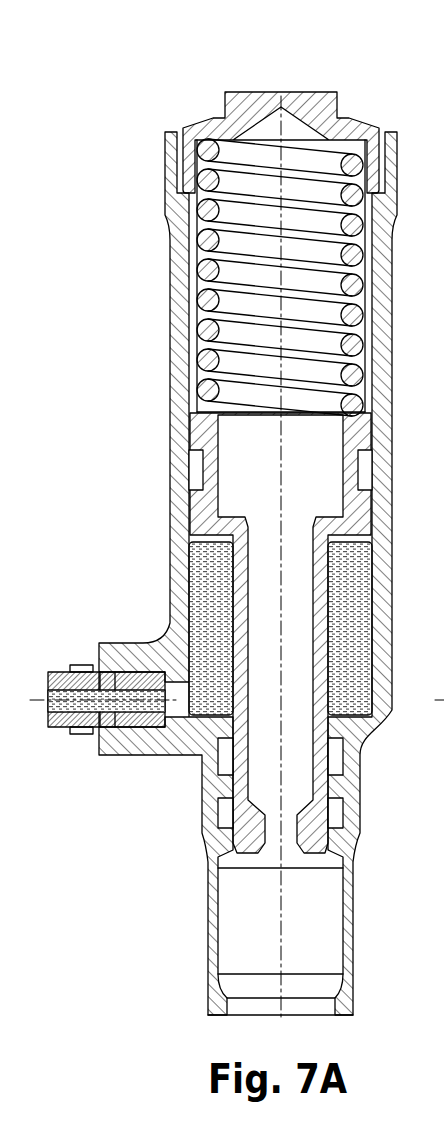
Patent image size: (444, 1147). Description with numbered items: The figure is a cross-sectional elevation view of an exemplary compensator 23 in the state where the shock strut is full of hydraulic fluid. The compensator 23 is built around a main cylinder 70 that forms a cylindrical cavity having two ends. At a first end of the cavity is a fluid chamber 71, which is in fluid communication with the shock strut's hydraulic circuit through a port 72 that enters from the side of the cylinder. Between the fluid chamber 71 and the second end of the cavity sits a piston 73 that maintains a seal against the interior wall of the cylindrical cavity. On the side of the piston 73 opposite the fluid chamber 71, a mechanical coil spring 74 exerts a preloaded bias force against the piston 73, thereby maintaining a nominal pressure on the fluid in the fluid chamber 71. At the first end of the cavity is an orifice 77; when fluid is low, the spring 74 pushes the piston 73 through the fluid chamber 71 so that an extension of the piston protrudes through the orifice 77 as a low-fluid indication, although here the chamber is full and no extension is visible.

The compensator 23 is at (246, 62).
The main cylinder 70 is at (392, 360).
The fluid chamber 71 is at (218, 603).
The port 72 is at (48, 677).
The piston 73 is at (372, 532).
The spring 74 is at (363, 255).
The orifice 77 is at (323, 1015).